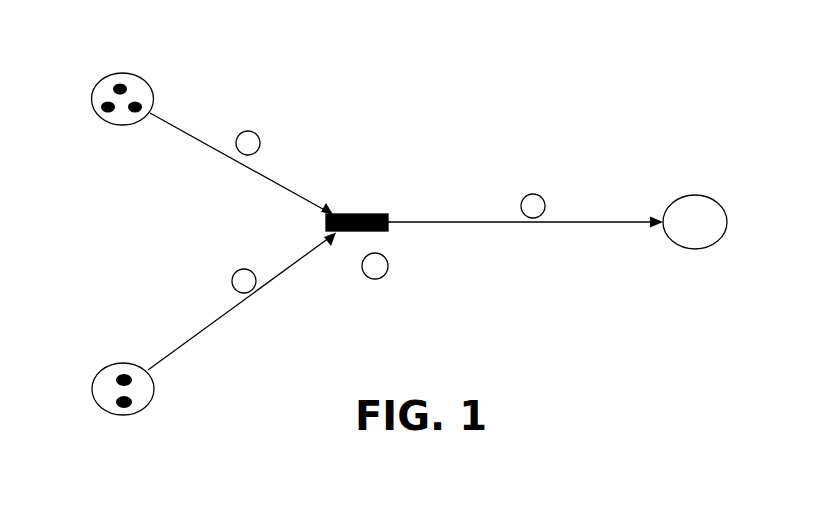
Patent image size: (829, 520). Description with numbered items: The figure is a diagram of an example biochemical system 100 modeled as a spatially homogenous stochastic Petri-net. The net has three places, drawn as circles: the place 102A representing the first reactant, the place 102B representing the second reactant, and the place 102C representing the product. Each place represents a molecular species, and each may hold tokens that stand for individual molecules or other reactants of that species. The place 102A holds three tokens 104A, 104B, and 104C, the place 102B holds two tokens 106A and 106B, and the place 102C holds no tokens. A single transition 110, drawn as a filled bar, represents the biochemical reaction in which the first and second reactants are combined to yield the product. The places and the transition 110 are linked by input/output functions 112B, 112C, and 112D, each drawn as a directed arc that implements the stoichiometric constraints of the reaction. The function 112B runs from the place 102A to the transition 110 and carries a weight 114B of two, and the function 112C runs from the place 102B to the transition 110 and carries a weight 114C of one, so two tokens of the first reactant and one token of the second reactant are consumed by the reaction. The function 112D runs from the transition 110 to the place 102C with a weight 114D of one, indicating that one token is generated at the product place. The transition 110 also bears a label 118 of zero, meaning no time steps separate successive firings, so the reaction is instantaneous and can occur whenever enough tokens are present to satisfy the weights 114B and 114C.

The biochemical system 100 is at (235, 424).
The place 102A is at (125, 73).
The place 102B is at (123, 363).
The place 102C is at (680, 248).
The token 104A is at (115, 88).
The token 104B is at (103, 108).
The token 104C is at (128, 110).
The token 106A is at (118, 379).
The token 106B is at (118, 401).
The transition 110 is at (353, 231).
The input/output function 112B is at (268, 176).
The input/output function 112C is at (238, 307).
The input/output function 112D is at (483, 223).
The weight 114B is at (250, 131).
The weight 114C is at (240, 270).
The weight 114D is at (538, 194).
The label 118 is at (372, 280).